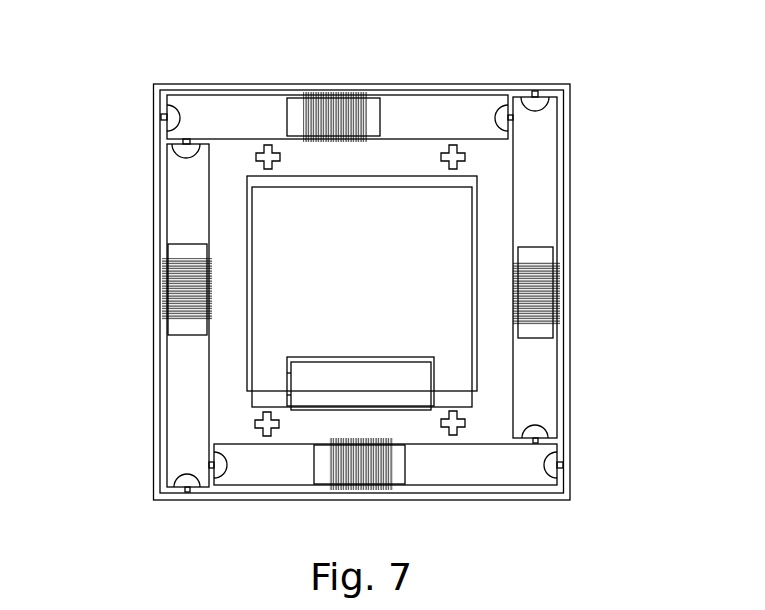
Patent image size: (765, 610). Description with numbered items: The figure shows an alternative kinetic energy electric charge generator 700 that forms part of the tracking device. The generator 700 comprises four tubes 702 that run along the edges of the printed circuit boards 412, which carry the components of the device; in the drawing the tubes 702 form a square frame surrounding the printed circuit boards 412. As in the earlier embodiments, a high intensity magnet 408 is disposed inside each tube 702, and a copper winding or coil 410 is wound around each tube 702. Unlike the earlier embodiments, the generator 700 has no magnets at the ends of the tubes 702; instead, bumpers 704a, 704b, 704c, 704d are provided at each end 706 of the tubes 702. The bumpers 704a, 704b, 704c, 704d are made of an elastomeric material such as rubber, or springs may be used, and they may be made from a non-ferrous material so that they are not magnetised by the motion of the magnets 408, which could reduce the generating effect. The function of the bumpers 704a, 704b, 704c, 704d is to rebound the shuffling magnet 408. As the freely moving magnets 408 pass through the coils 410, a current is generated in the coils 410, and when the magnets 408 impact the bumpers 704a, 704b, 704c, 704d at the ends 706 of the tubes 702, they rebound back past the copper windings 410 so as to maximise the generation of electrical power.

The kinetic energy electric charge generator 700 is at (125, 60).
The tube 702 is at (490, 102).
The bumper 704a is at (532, 105).
The bumper 704b is at (217, 455).
The bumper 704c is at (182, 152).
The bumper 704d is at (168, 110).
The end of tube 706 is at (197, 138).
The high intensity magnet 408 is at (370, 105).
The copper winding/coil 410 is at (330, 105).
The printed circuit boards 412 is at (265, 228).